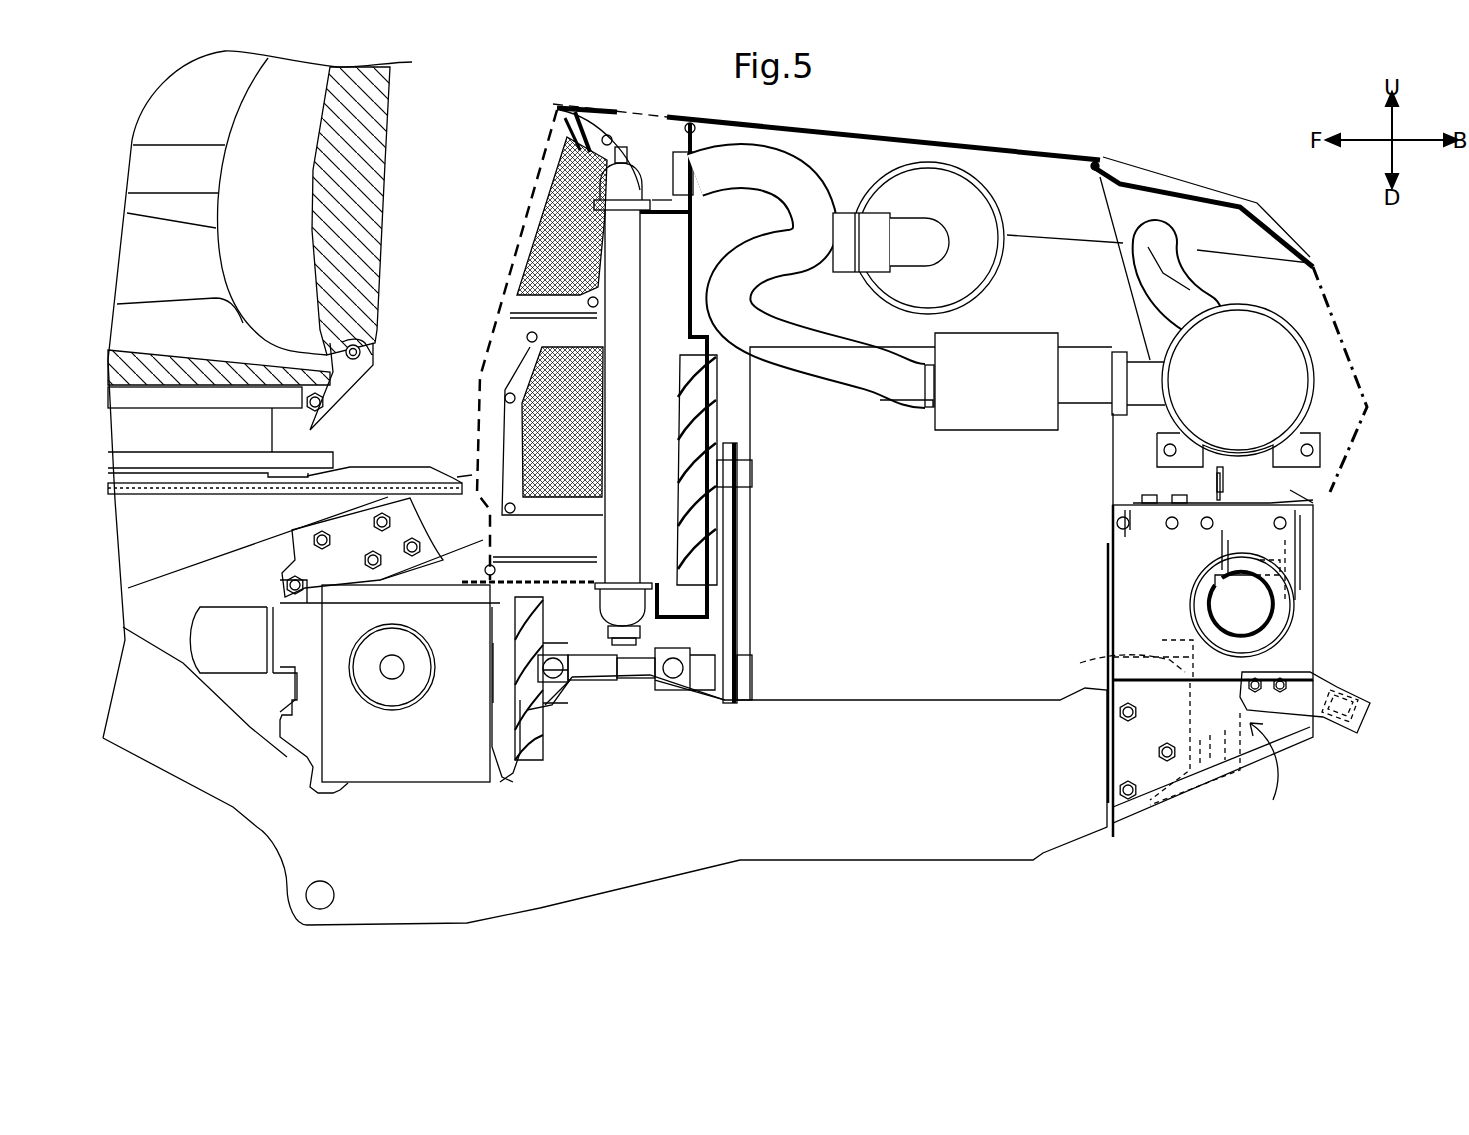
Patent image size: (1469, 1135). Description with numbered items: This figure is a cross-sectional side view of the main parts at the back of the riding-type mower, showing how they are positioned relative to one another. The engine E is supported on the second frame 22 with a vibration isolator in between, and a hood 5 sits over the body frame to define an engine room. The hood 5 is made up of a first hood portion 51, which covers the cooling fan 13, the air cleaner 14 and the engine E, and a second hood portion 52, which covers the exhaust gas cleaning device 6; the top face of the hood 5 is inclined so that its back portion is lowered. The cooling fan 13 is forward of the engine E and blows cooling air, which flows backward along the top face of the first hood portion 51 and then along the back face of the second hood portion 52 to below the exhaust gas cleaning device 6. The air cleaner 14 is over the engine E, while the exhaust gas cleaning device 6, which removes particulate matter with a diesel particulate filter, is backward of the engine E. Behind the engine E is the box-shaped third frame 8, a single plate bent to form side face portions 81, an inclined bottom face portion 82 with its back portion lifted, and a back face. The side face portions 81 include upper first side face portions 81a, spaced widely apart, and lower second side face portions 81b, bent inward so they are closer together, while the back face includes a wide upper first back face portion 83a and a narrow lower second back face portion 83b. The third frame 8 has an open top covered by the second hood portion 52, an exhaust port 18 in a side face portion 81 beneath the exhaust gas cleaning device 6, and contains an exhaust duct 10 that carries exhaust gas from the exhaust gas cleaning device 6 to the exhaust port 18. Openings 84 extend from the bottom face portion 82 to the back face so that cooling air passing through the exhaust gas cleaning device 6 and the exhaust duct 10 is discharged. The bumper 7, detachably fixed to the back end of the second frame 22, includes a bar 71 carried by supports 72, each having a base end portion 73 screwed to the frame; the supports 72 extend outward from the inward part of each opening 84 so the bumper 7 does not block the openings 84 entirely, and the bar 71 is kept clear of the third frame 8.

The hood 5 is at (962, 287).
The first hood portion 51 is at (917, 135).
The second hood portion 52 is at (1160, 190).
The exhaust gas cleaning device 6 is at (1270, 350).
The bumper 7 is at (1225, 701).
The bar 71 is at (1355, 690).
The supports 72 is at (1340, 765).
The base end portion 73 is at (1110, 657).
The third frame 8 is at (1290, 492).
The exhaust duct 10 is at (1145, 268).
The cooling fan 13 is at (693, 373).
The air cleaner 14 is at (975, 205).
The exhaust port 18 is at (1200, 612).
The second frame 22 is at (900, 835).
The side face portions 81 is at (1160, 655).
The first side face portions 81a is at (1155, 548).
The second side face portions 81b is at (1143, 738).
The bottom face portion 82 is at (1178, 825).
The first back face portion 83a is at (1315, 620).
The second back face portion 83b is at (1240, 751).
The openings 84 is at (1267, 774).
The engine E is at (993, 360).